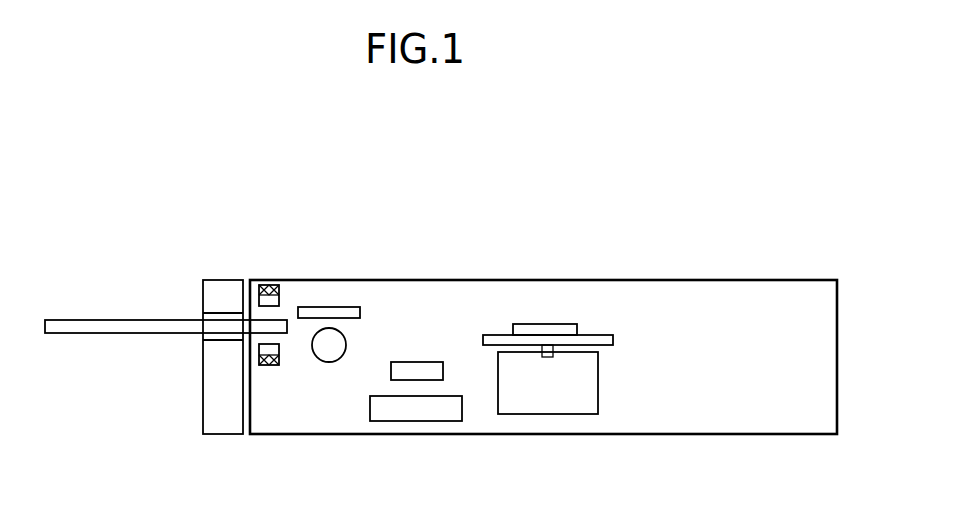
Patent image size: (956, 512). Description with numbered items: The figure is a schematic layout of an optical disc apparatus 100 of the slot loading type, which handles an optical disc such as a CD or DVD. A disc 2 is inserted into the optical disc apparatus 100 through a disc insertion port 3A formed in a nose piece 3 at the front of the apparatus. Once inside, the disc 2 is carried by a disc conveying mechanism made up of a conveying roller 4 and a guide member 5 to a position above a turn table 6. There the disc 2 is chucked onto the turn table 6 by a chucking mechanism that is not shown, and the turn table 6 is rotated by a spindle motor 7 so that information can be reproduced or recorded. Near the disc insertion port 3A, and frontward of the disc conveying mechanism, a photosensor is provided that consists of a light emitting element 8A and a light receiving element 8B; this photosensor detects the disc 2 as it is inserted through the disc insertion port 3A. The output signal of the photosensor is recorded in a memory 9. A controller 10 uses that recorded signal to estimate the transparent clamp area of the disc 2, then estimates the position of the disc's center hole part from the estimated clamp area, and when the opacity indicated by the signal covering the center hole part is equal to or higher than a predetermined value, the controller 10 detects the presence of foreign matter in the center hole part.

The optical disc apparatus 100 is at (747, 300).
The disc 2 is at (105, 319).
The nose piece 3 is at (203, 416).
The disc insertion port 3A is at (203, 337).
The conveying roller 4 is at (330, 362).
The guide member 5 is at (337, 313).
The turn table 6 is at (597, 335).
The spindle motor 7 is at (555, 414).
The light emitting element 8A is at (272, 288).
The light receiving element 8B is at (264, 367).
The memory 9 is at (398, 362).
The controller 10 is at (431, 422).